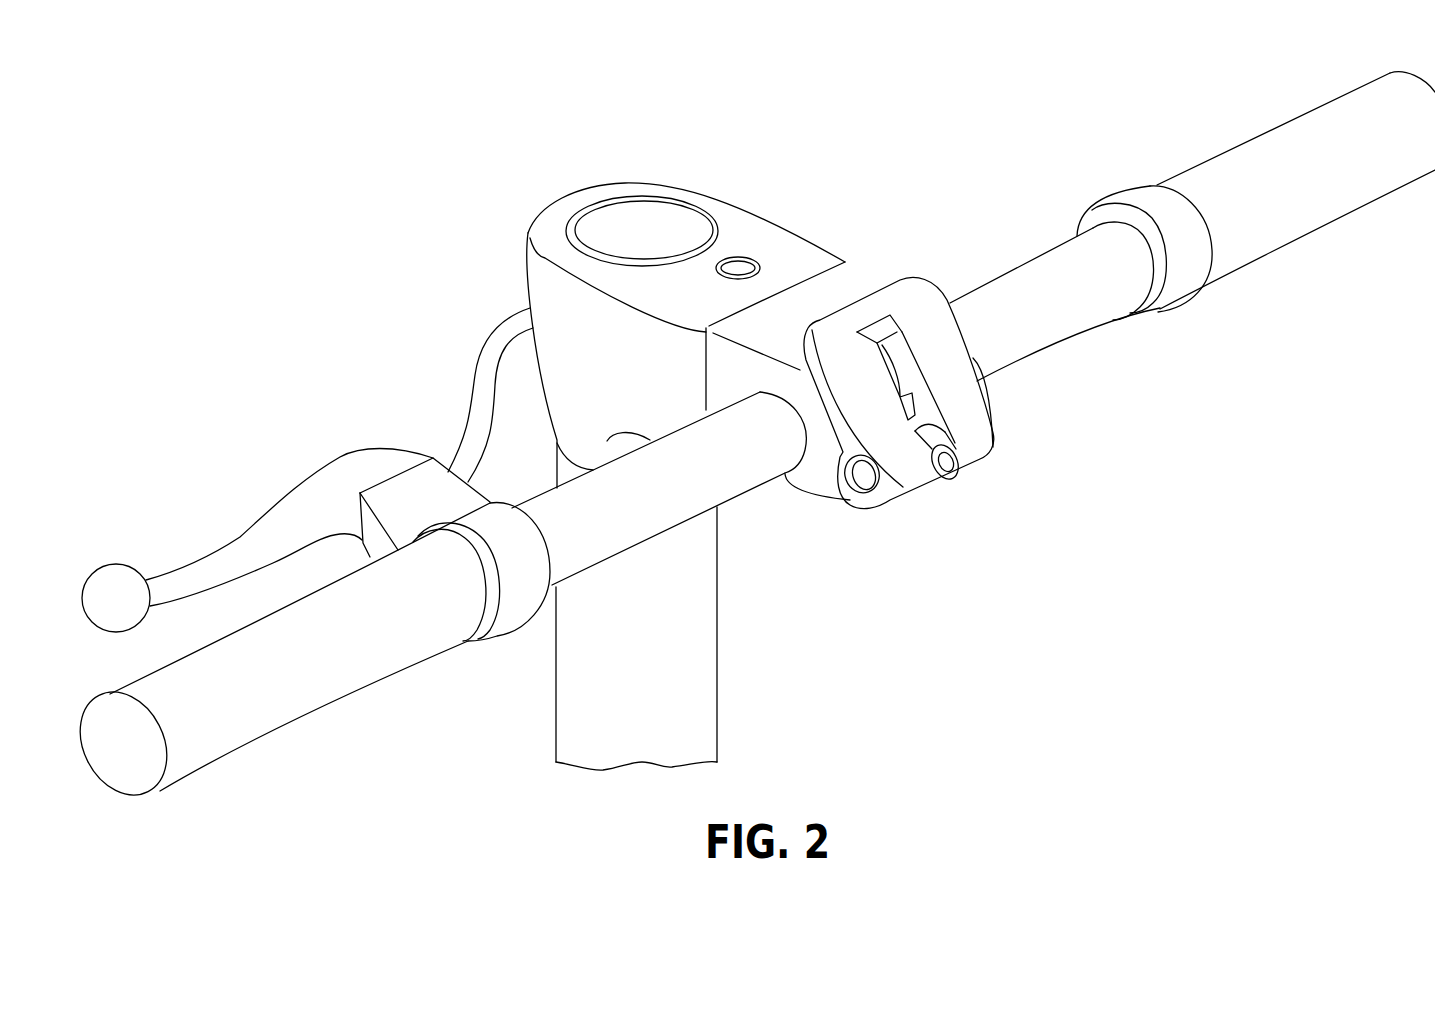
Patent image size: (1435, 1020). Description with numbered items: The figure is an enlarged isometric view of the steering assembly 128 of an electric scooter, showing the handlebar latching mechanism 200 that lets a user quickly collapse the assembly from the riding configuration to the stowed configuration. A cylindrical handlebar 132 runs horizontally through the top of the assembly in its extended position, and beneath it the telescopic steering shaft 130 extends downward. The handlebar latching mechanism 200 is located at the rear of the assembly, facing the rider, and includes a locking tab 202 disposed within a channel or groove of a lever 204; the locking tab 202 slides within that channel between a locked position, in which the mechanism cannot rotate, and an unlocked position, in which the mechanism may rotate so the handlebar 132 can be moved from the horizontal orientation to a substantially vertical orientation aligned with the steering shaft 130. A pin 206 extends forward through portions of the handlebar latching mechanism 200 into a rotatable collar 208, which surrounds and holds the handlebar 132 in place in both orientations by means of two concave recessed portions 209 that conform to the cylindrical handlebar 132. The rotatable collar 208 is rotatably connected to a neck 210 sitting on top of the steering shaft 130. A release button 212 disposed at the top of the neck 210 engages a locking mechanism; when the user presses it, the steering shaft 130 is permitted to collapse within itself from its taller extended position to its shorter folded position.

The steering assembly 128 is at (568, 135).
The steering shaft 130 is at (748, 634).
The handlebar 132 is at (740, 480).
The handlebar latching mechanism 200 is at (1023, 410).
The locking tab 202 is at (908, 357).
The lever 204 is at (920, 305).
The pin 206 is at (942, 481).
The rotatable collar 208 is at (850, 283).
The concave recessed portions 209 is at (809, 468).
The neck 210 is at (607, 182).
The release button 212 is at (670, 220).